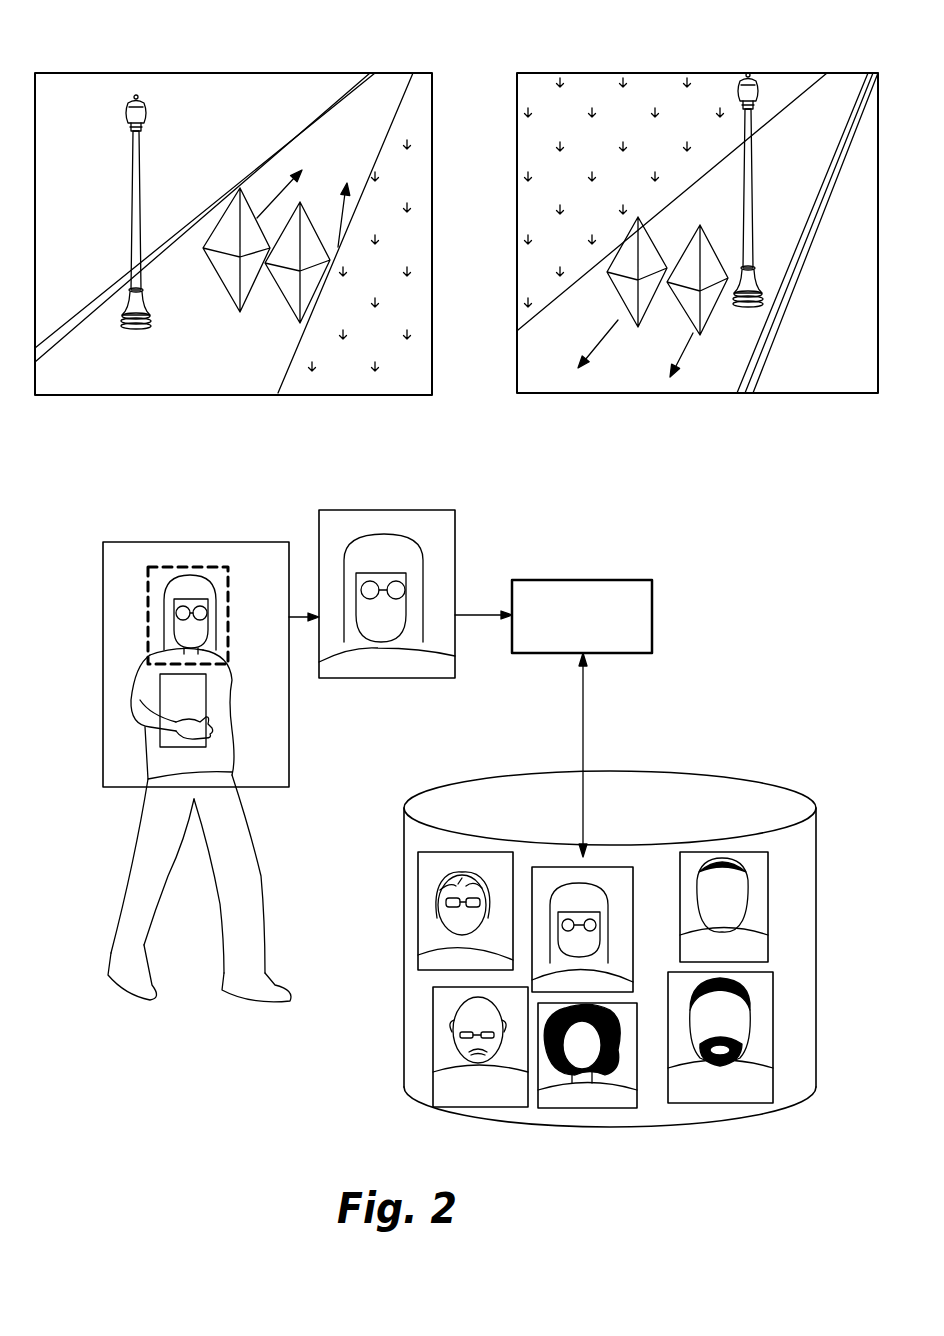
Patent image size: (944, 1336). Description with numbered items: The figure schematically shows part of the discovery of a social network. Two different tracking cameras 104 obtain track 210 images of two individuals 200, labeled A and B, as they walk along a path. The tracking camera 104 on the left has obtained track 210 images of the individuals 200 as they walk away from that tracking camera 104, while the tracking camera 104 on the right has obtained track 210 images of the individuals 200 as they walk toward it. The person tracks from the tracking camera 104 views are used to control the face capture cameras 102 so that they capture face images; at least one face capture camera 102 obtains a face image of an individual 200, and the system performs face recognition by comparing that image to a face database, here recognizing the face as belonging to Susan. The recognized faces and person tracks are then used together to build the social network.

The tracking camera 104 is at (102, 46).
The face capture camera 102 is at (98, 497).
The individual 200 is at (277, 303).
The track 210 is at (337, 207).